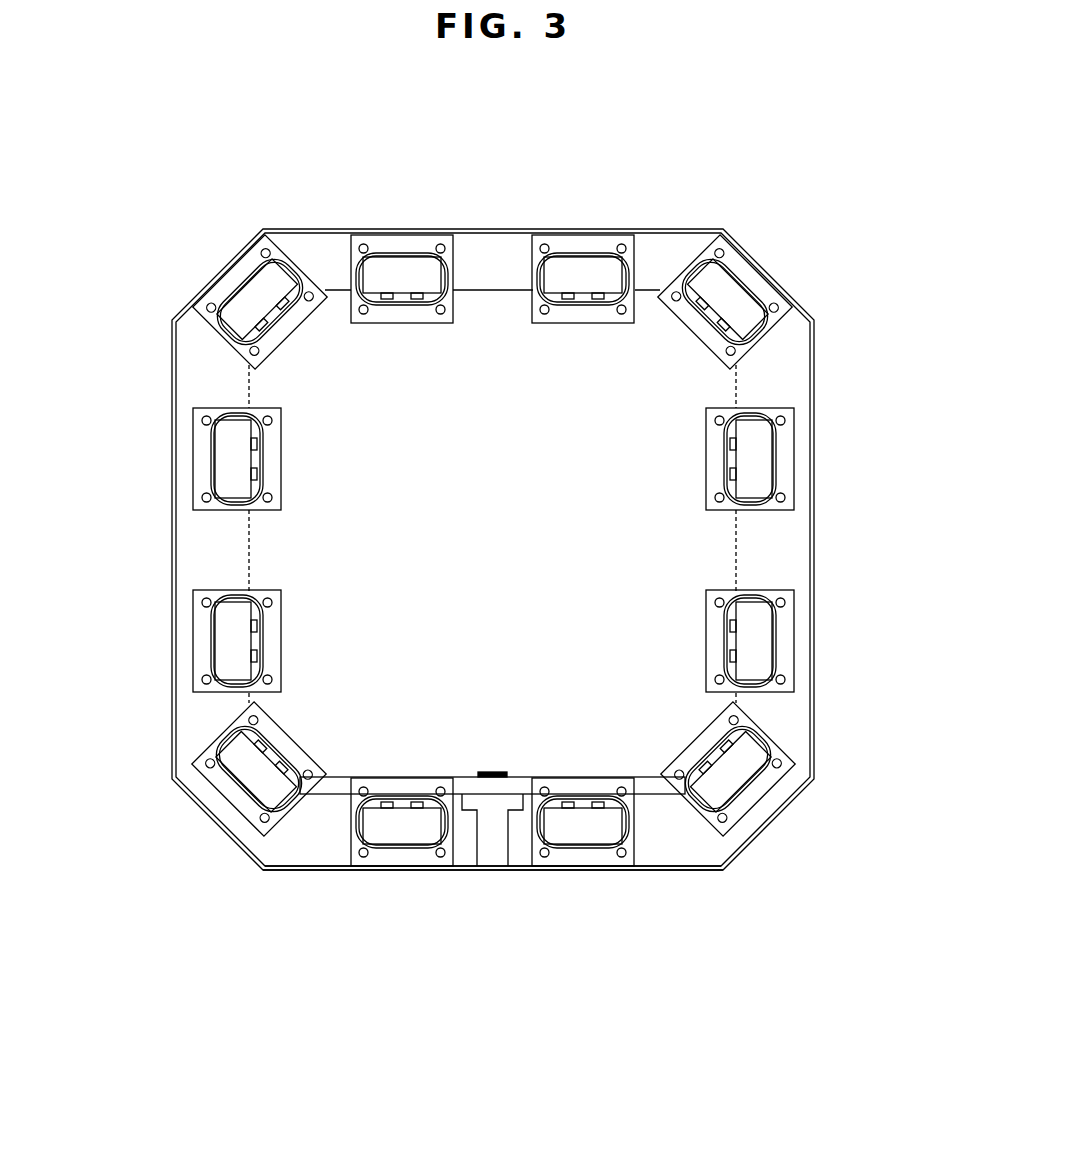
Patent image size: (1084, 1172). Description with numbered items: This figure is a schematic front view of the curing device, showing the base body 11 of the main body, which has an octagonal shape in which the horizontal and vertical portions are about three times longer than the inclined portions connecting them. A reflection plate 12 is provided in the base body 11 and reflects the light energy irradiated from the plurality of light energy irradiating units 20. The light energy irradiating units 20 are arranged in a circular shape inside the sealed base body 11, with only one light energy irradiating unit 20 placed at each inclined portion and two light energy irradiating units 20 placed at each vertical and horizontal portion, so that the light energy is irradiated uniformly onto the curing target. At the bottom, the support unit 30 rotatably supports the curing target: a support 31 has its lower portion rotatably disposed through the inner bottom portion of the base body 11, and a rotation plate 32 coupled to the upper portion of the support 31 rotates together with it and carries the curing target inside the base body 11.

The base body 11 is at (815, 518).
The reflection plate 12 is at (668, 872).
The light energy irradiating unit 20 is at (407, 273).
The support unit 30 is at (492, 956).
The support 31 is at (495, 845).
The rotation plate 32 is at (465, 762).